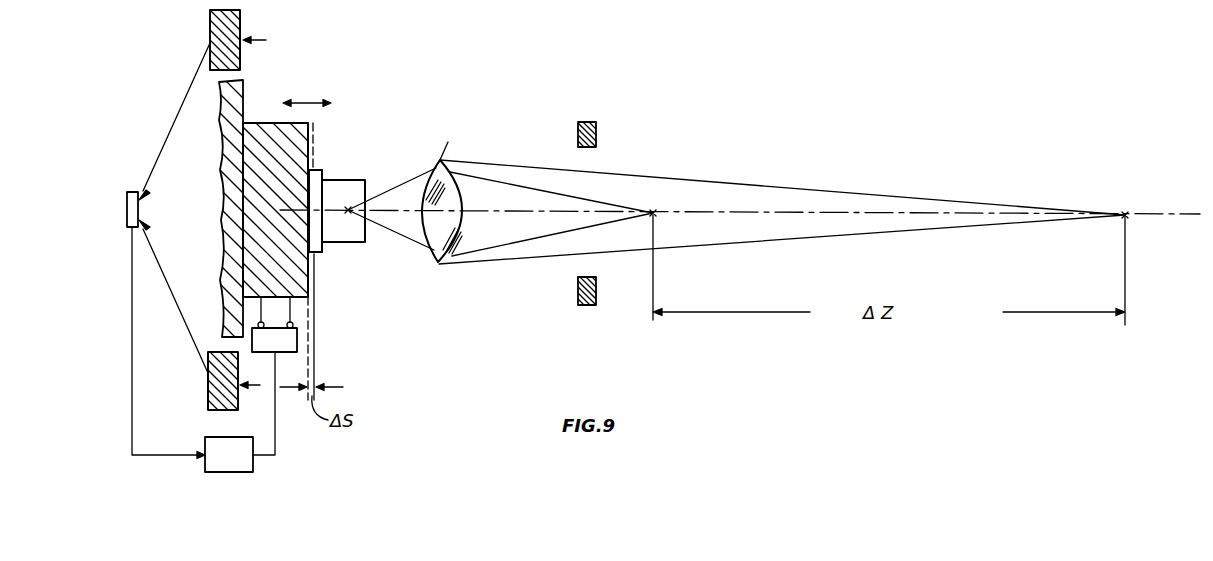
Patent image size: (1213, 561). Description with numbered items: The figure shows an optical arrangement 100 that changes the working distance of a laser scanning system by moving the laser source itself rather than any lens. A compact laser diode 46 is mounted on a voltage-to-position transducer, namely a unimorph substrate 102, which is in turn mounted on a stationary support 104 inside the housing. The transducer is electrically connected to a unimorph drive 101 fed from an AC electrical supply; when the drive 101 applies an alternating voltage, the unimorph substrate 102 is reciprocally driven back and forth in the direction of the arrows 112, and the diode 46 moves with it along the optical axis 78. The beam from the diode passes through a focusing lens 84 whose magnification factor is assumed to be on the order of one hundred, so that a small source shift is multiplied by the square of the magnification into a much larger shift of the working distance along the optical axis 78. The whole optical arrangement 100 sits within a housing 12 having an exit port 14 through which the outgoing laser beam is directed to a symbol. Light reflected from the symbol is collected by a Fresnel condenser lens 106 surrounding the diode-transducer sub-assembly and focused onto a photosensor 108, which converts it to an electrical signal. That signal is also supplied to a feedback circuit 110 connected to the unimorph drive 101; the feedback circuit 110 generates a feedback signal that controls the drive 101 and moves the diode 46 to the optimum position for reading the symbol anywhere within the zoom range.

The housing 12 is at (597, 126).
The exit port 14 is at (586, 148).
The laser diode 46 is at (353, 174).
The optical axis 78 is at (1187, 196).
The focusing lens 84 is at (438, 263).
The optical arrangement 100 is at (436, 108).
The unimorph drive 101 is at (298, 339).
The unimorph substrate 102 is at (258, 122).
The stationary support 104 is at (227, 188).
The Fresnel condenser lens 106 is at (244, 58).
The photosensor 108 is at (132, 189).
The feedback circuit 110 is at (237, 473).
The arrows 112 is at (312, 104).